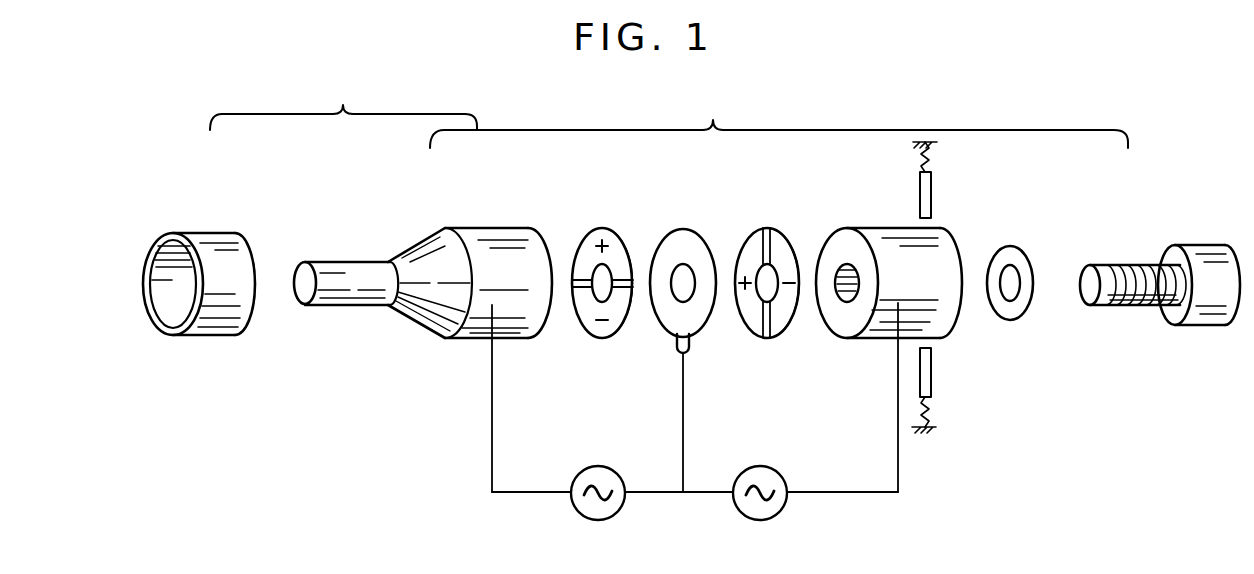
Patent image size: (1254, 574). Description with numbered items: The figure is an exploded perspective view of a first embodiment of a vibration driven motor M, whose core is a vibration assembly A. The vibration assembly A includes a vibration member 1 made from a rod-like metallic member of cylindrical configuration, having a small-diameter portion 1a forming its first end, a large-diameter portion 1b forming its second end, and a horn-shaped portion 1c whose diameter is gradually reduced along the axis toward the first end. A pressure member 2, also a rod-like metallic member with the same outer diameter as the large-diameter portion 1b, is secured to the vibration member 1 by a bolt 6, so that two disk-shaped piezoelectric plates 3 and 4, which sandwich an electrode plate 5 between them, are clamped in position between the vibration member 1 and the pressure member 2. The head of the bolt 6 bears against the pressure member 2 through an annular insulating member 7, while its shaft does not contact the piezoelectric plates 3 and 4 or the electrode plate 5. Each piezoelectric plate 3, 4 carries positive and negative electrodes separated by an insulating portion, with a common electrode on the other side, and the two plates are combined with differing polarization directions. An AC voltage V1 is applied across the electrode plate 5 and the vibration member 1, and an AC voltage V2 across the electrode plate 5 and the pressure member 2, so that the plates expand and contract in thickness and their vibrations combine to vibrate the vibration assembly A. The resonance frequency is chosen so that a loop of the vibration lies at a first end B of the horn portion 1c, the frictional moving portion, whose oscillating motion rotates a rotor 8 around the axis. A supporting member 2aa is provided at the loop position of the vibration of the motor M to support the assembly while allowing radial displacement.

The vibration driven motor M is at (343, 104).
The vibration assembly A is at (779, 118).
The rotor 8 is at (217, 238).
The vibration member 1 is at (423, 273).
The small-diameter portion 1a is at (333, 300).
The large-diameter portion 1b is at (478, 318).
The horn-shaped portion 1c is at (409, 312).
The frictional moving portion B is at (410, 259).
The piezoelectric plate 3 is at (602, 228).
The electrode plate 5 is at (683, 228).
The piezoelectric plate 4 is at (765, 228).
The pressure member 2 is at (893, 237).
The supporting member 2aa is at (931, 186).
The annular insulating member 7 is at (1012, 247).
The bolt 6 is at (1118, 266).
The AC voltage V1 is at (598, 481).
The AC voltage V2 is at (760, 481).